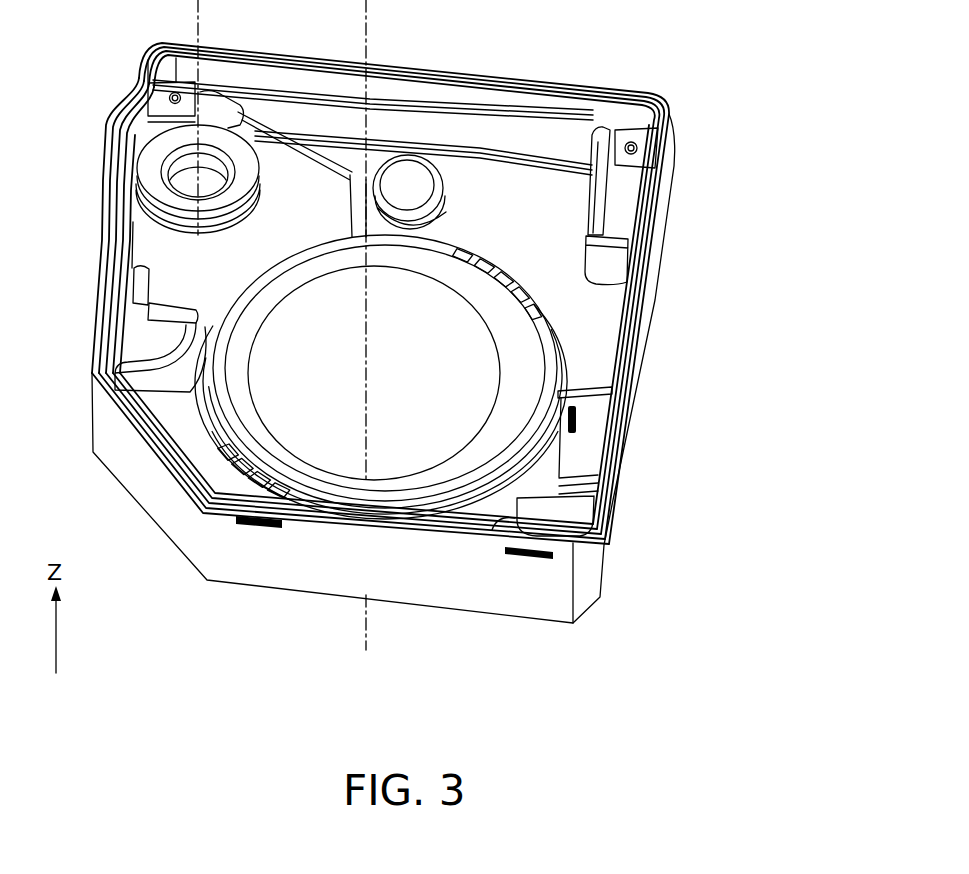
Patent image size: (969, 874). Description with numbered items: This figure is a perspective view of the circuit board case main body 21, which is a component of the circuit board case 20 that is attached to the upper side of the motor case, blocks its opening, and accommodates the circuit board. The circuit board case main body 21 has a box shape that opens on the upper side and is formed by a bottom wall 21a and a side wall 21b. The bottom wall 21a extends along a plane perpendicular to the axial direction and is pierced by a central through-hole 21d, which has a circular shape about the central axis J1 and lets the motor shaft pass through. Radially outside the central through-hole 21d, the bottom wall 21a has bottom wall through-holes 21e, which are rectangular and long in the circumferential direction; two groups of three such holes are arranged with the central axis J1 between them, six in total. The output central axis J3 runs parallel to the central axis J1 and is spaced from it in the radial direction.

The circuit board case 20 is at (691, 82).
The circuit board case main body 21 is at (690, 133).
The bottom wall 21a is at (467, 188).
The side wall 21b is at (653, 231).
The central through-hole 21d is at (500, 358).
The bottom wall through-holes 21e is at (509, 298).
The central axis J1 is at (366, 44).
The output central axis J3 is at (198, 32).